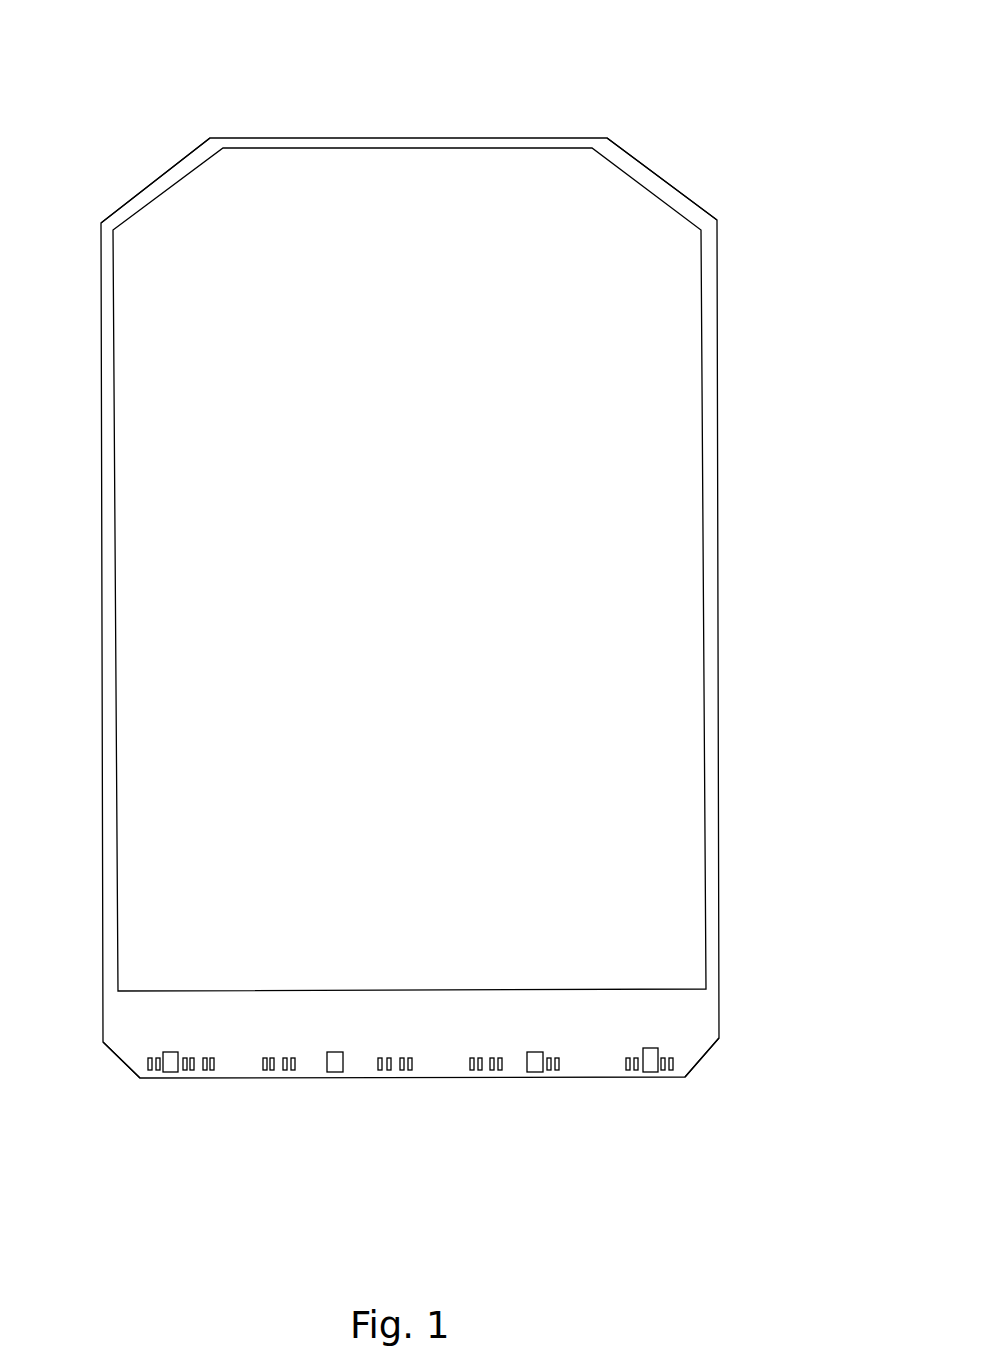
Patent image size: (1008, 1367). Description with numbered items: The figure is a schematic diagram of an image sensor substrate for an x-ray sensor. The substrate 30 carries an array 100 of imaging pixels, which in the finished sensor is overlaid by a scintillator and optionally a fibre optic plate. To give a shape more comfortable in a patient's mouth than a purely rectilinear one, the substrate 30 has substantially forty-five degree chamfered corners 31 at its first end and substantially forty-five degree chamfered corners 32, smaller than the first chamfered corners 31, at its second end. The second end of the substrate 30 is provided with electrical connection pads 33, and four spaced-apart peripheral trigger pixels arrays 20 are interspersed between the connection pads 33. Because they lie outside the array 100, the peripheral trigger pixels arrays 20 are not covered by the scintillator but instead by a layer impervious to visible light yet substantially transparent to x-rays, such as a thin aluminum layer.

The substrate 30 is at (648, 74).
The array of imaging pixels 100 is at (408, 553).
The first chamfered corners 31 is at (128, 166).
The second chamfered corners 32 is at (109, 1070).
The peripheral trigger pixels arrays 20 is at (170, 1062).
The electrical connection pads 33 is at (262, 1070).